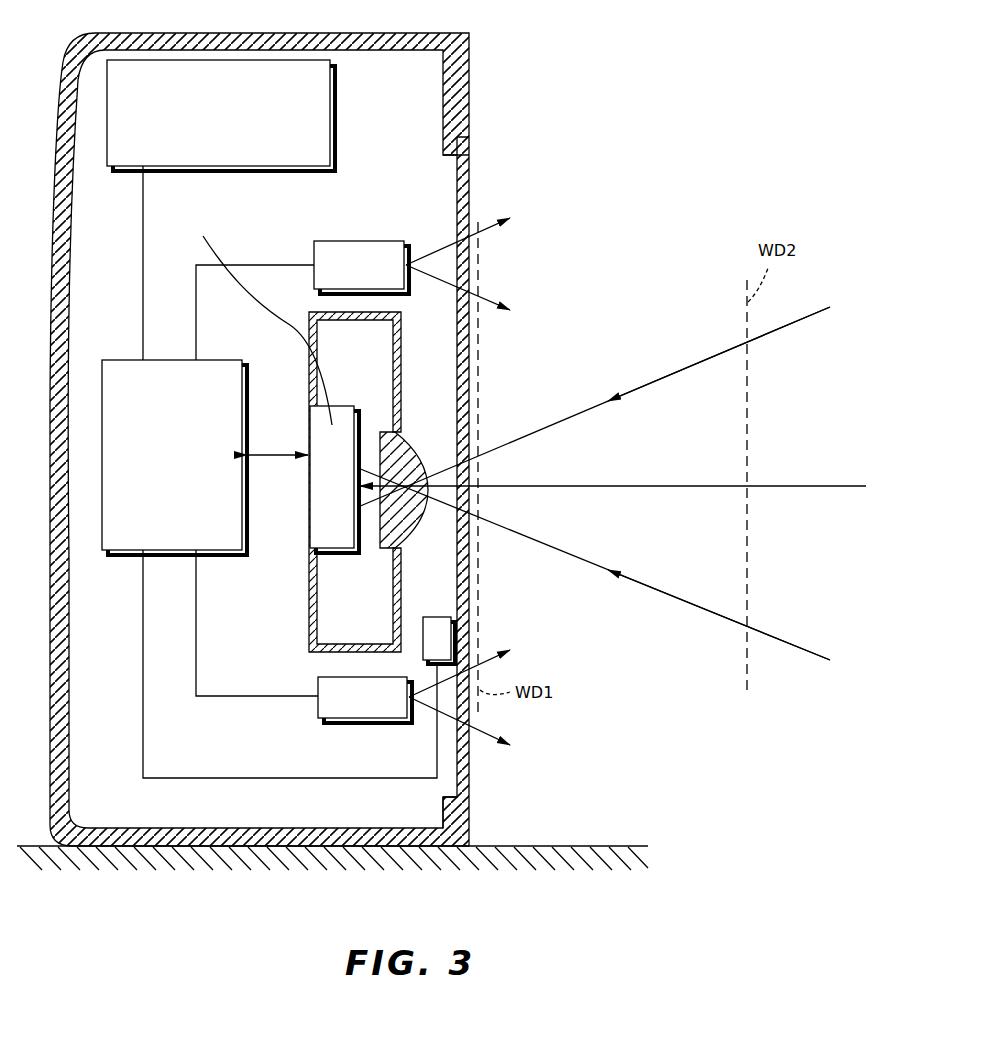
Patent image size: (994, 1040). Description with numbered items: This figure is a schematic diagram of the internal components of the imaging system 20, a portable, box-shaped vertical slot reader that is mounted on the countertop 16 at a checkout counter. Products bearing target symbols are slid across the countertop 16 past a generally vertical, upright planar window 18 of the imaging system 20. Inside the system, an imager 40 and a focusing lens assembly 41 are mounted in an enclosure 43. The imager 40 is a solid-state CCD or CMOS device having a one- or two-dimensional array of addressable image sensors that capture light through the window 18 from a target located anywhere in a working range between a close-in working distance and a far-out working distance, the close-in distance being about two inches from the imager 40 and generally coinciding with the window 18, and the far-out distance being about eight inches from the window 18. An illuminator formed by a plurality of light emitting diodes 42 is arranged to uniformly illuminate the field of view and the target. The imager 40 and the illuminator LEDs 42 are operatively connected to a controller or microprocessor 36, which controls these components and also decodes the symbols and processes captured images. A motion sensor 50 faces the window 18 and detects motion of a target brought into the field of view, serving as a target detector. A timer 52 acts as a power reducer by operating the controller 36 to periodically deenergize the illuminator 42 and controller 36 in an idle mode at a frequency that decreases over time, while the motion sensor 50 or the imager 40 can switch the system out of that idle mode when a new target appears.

The countertop 16 is at (552, 845).
The window 18 is at (469, 160).
The imaging system 20 is at (302, 432).
The controller or microprocessor 36 is at (122, 556).
The imager 40 is at (321, 515).
The focusing lens assembly 41 is at (405, 540).
The illuminator light emitting diodes 42 is at (372, 262).
The enclosure 43 is at (403, 345).
The motion sensor 50 is at (436, 625).
The timer 52 is at (333, 113).